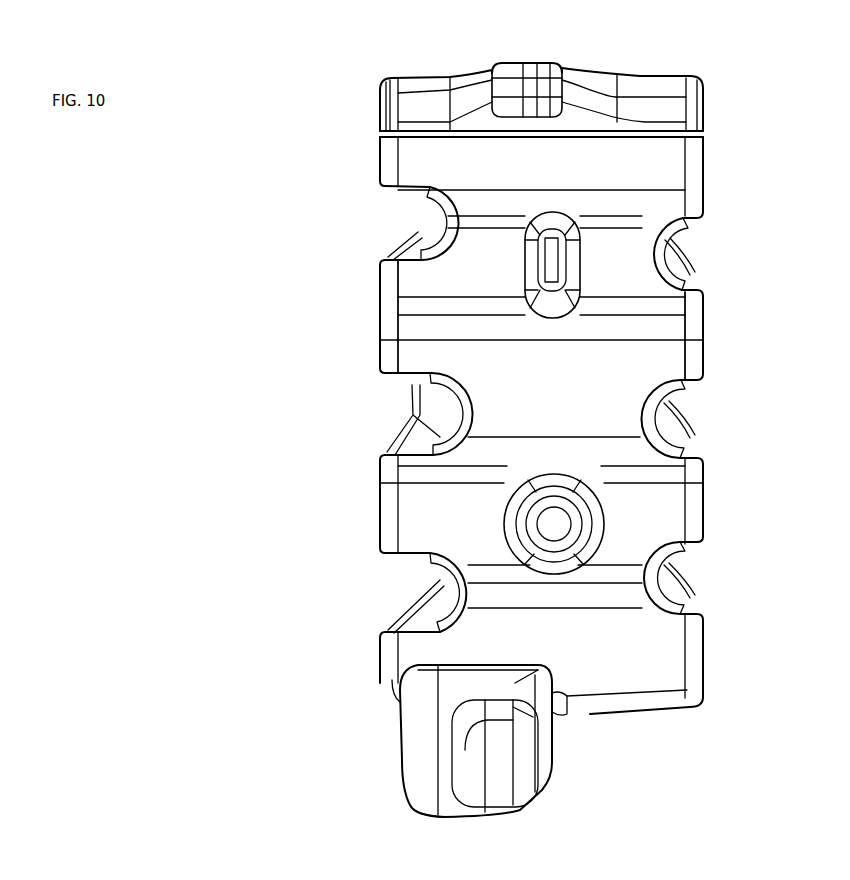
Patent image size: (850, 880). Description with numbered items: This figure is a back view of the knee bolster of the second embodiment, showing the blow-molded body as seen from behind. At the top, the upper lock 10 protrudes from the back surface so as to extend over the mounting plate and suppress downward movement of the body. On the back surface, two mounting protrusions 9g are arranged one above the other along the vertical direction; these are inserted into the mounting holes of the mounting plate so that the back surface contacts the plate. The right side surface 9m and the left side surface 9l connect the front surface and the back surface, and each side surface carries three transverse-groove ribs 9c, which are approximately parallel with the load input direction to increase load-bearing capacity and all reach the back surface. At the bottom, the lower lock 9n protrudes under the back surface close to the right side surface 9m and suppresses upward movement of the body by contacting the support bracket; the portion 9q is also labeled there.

The upper lock 10 is at (538, 64).
The transverse-groove ribs 9c is at (398, 220).
The mounting protrusions 9g is at (578, 220).
The right side surface 9m is at (400, 361).
The left side surface 9l is at (703, 358).
The protruding lug 9q is at (468, 680).
The lower lock 9n is at (378, 821).